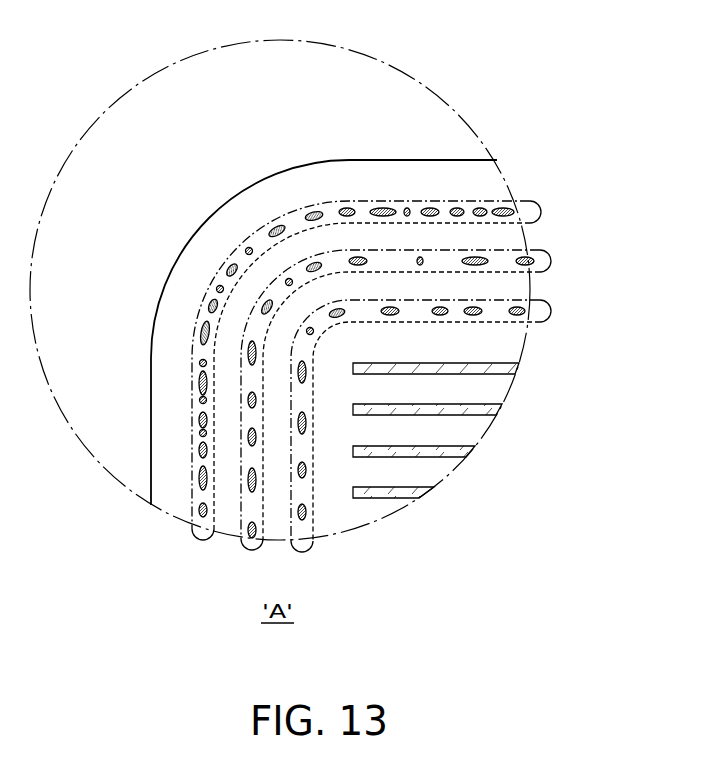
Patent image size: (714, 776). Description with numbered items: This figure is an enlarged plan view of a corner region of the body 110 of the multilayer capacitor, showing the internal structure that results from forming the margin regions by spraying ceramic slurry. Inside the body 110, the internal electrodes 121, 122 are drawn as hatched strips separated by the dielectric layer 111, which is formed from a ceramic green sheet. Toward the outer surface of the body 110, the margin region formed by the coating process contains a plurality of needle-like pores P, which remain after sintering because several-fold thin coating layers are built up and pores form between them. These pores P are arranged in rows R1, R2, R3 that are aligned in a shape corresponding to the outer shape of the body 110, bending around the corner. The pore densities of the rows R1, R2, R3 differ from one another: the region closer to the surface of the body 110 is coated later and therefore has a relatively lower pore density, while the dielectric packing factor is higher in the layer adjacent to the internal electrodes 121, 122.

The body 110 is at (345, 148).
The row of needle-like pores R3 is at (534, 212).
The row of needle-like pores R2 is at (542, 262).
The row of needle-like pores R1 is at (542, 312).
The needle-like pore P is at (481, 208).
The internal electrode 121 is at (505, 368).
The internal electrode 122 is at (488, 411).
The dielectric layer 111 is at (437, 475).